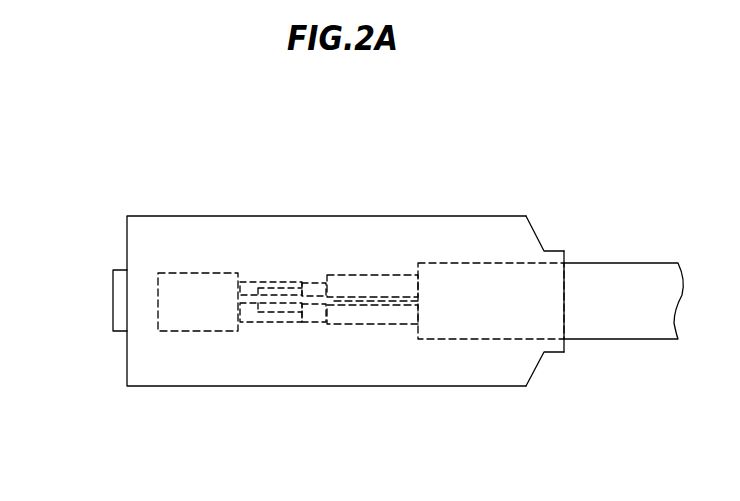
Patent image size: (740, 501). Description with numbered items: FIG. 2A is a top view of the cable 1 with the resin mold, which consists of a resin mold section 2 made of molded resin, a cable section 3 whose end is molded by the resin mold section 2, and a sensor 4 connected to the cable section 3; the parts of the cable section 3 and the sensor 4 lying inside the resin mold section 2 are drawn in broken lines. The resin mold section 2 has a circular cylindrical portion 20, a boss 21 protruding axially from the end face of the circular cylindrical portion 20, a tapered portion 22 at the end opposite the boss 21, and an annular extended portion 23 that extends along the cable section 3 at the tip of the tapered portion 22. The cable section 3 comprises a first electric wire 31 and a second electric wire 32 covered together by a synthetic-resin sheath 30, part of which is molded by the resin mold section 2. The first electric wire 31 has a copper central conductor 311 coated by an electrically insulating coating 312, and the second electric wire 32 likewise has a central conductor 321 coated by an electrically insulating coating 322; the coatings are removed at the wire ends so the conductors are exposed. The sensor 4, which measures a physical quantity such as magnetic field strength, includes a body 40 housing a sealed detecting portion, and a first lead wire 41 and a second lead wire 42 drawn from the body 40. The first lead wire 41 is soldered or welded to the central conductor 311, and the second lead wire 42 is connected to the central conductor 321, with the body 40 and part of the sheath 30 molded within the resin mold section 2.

The cable with the resin mold 1 is at (83, 140).
The resin mold section 2 is at (527, 406).
The cable section 3 is at (632, 356).
The sensor 4 is at (188, 254).
The circular cylindrical portion 20 is at (476, 225).
The boss 21 is at (118, 300).
The tapered portion 22 is at (528, 234).
The annular extended portion 23 is at (553, 258).
The sheath 30 is at (643, 272).
The first electric wire 31 is at (455, 160).
The central conductor 311 is at (313, 283).
The electrically insulating coating 312 is at (360, 275).
The second electric wire 32 is at (285, 436).
The central conductor 321 is at (312, 323).
The electrically insulating coating 322 is at (358, 326).
The body 40 is at (172, 333).
The first lead wire 41 is at (258, 283).
The second lead wire 42 is at (257, 323).